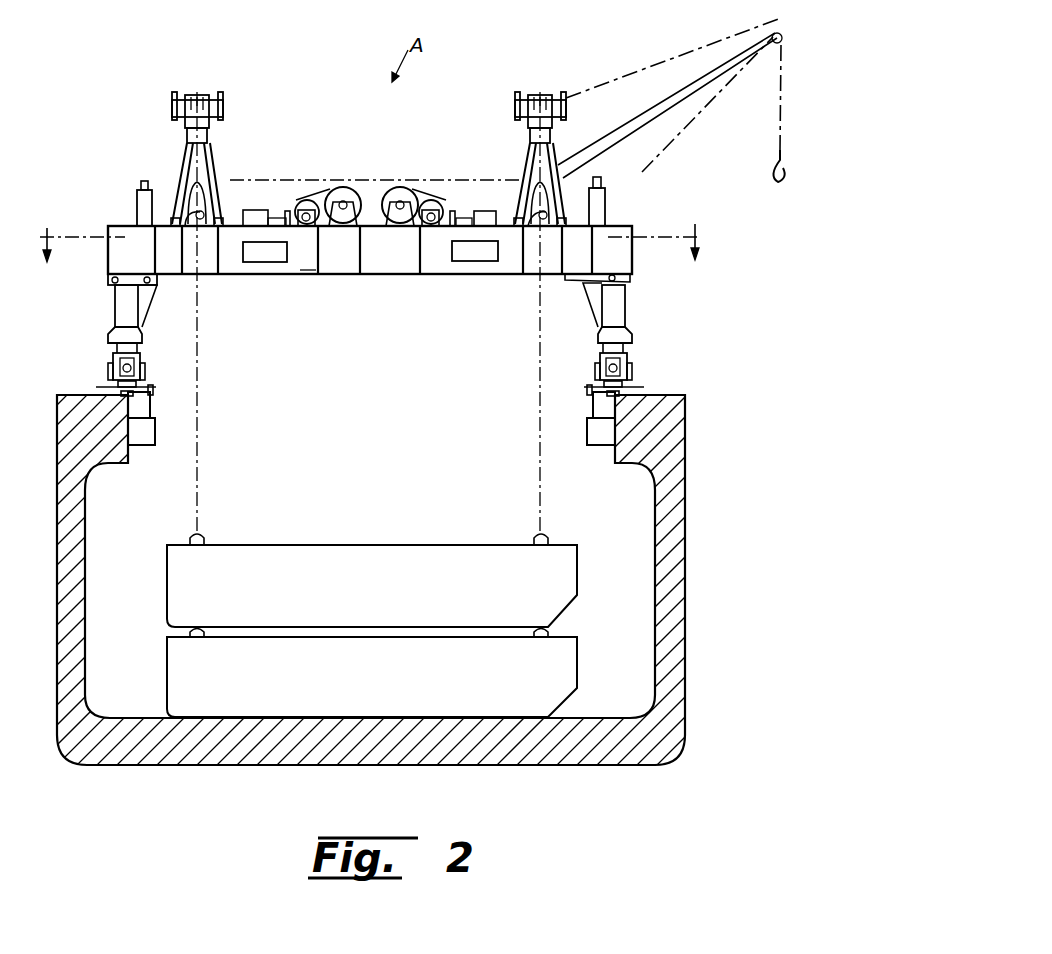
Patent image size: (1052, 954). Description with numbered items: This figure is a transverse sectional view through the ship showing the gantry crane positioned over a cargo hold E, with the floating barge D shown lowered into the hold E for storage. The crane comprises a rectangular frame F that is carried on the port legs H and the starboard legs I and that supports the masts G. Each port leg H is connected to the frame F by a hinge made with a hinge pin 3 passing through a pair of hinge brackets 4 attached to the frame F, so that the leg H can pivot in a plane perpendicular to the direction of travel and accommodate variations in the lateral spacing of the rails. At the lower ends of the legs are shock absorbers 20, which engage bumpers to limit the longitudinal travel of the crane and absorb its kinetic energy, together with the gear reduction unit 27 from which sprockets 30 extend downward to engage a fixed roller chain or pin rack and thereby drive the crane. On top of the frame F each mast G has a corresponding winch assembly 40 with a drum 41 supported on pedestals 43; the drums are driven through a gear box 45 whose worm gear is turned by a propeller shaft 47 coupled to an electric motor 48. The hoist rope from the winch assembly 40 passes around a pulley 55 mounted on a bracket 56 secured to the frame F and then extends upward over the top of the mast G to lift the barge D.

The hinge pin 3 is at (620, 281).
The hinge brackets 4 is at (596, 278).
The shock absorbers 20 is at (122, 366).
The gear reduction unit 27 is at (146, 371).
The sprockets 30 is at (114, 386).
The winch assembly 40 is at (377, 188).
The drum 41 is at (332, 192).
The pedestals 43 is at (338, 216).
The gear box 45 is at (301, 200).
The propeller shaft 47 is at (287, 212).
The electric motor 48 is at (254, 210).
The pulley 55 is at (567, 195).
The bracket 56 is at (198, 220).
The floating barge D is at (372, 625).
The cargo hold E is at (526, 579).
The frame F is at (414, 275).
The masts G is at (178, 167).
The port legs H is at (370, 313).
The starboard legs I is at (304, 275).